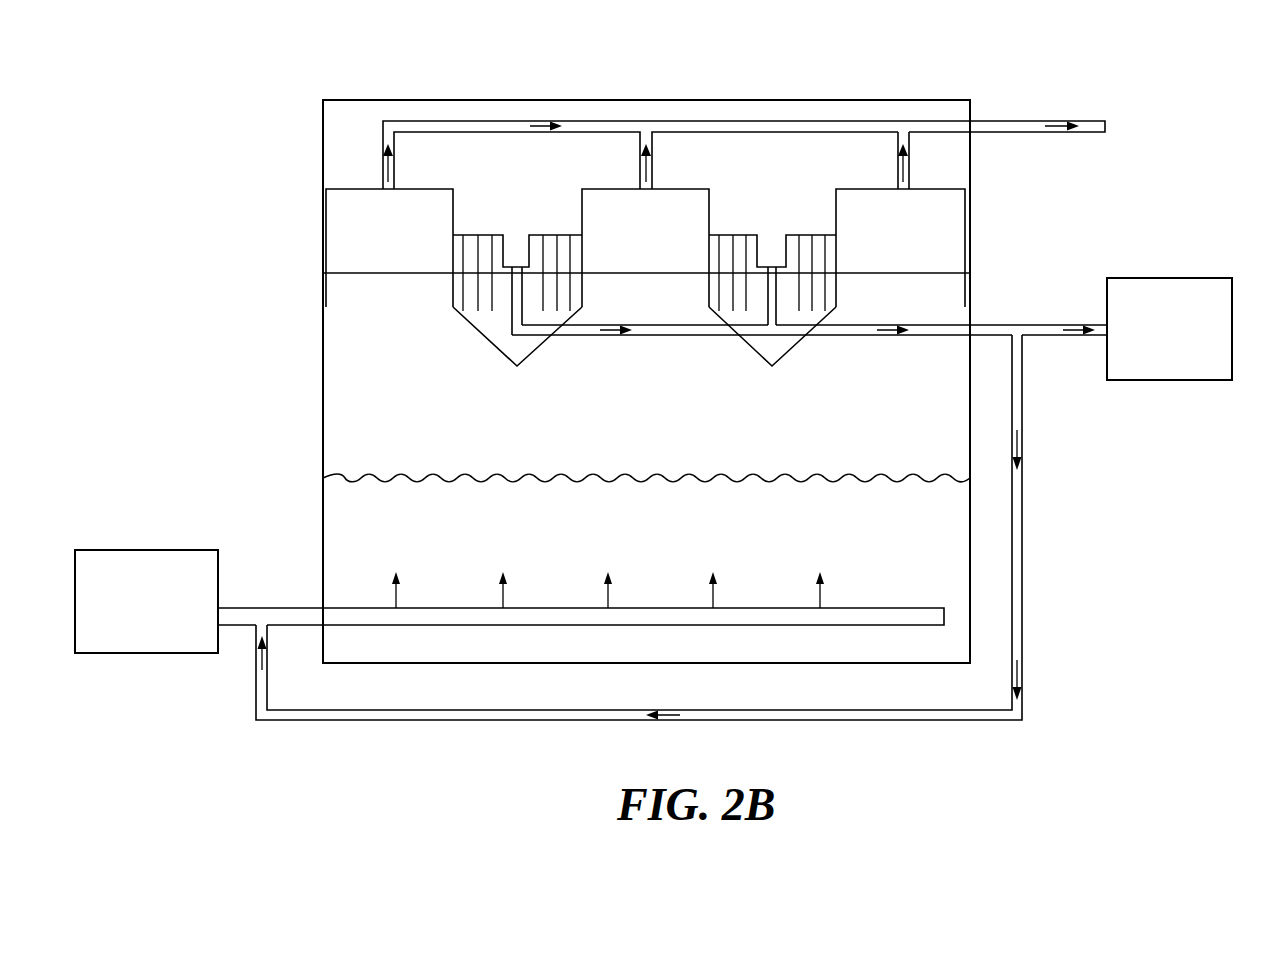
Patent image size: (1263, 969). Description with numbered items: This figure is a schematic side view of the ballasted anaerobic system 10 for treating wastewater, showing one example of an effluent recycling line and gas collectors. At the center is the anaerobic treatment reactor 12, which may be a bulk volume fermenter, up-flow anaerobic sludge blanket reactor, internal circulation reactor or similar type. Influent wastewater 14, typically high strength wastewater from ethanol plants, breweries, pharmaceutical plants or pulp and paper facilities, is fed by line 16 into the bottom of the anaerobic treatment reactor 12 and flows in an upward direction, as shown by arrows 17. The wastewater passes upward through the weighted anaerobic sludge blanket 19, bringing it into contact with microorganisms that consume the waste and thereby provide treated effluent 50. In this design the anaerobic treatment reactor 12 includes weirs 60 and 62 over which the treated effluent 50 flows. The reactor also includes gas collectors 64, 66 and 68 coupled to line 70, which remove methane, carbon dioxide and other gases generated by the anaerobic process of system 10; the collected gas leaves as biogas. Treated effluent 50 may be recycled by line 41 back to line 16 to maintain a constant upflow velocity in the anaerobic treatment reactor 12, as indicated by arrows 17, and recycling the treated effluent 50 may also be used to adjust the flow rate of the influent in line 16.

The ballasted anaerobic system 10 is at (350, 52).
The anaerobic treatment reactor 12 is at (973, 167).
The influent wastewater 14 is at (134, 644).
The line 16 is at (243, 615).
The arrows 17 is at (398, 596).
The weighted anaerobic sludge blanket 19 is at (792, 484).
The line 41 is at (875, 717).
The treated effluent 50 is at (1156, 371).
The weir 60 is at (514, 250).
The weir 62 is at (768, 250).
The gas collector 64 is at (404, 253).
The gas collector 66 is at (661, 253).
The gas collector 68 is at (914, 253).
The line 70 is at (1007, 119).